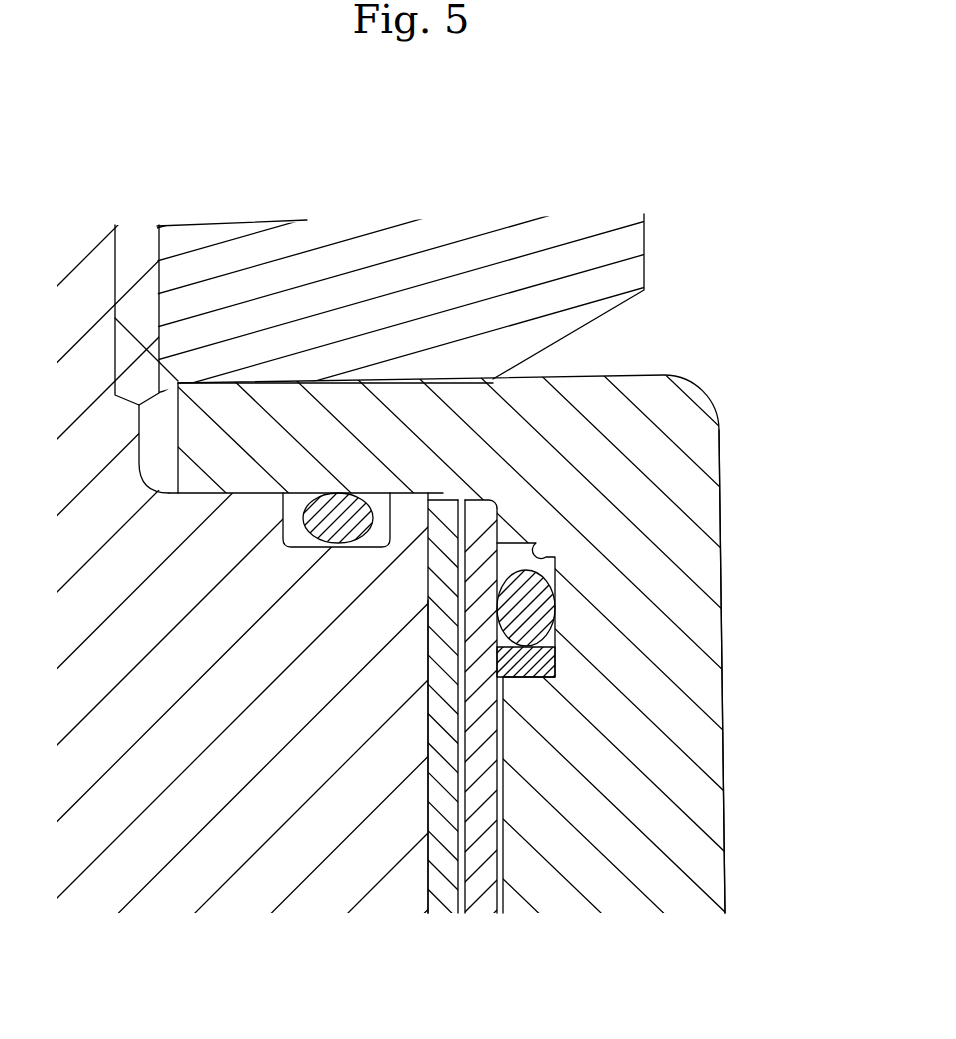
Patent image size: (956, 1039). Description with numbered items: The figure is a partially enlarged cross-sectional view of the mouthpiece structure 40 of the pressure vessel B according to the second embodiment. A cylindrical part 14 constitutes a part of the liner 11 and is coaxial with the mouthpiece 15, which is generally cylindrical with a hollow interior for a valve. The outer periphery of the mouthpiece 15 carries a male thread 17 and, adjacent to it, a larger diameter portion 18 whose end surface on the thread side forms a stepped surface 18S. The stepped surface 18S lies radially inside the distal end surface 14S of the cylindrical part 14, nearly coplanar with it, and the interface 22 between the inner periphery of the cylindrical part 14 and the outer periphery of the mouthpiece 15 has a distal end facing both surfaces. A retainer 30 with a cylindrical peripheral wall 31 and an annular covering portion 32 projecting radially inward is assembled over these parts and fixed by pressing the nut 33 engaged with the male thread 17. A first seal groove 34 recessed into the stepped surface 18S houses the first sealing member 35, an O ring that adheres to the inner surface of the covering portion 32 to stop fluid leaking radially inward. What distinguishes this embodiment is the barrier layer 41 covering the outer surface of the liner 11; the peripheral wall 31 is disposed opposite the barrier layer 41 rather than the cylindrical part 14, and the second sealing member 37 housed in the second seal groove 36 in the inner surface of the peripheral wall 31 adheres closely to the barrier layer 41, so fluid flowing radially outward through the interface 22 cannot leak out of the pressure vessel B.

The liner 11 is at (483, 950).
The cylindrical part 14 is at (447, 760).
The distal end surface 14S is at (440, 493).
The mouthpiece 15 is at (88, 272).
The male thread 17 is at (150, 267).
The larger diameter portion 18 is at (283, 870).
The stepped surface 18S is at (247, 492).
The interface 22 is at (432, 802).
The retainer 30 is at (692, 407).
The peripheral wall 31 is at (683, 716).
The covering portion 32 is at (400, 405).
The nut 33 is at (543, 238).
The first seal groove 34 is at (294, 527).
The first sealing member 35 is at (338, 507).
The second seal groove 36 is at (538, 550).
The second sealing member 37 is at (548, 612).
The mouthpiece structure 40 is at (617, 171).
The barrier layer 41 is at (480, 722).
The pressure vessel B is at (700, 137).